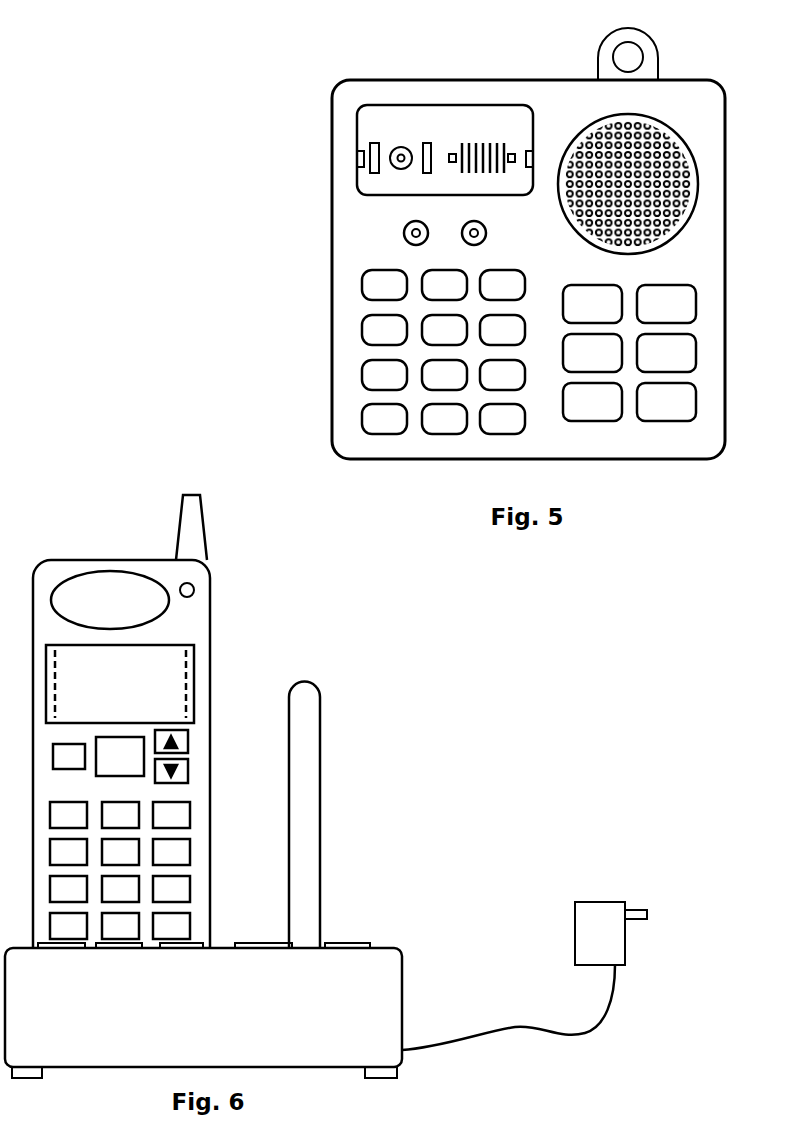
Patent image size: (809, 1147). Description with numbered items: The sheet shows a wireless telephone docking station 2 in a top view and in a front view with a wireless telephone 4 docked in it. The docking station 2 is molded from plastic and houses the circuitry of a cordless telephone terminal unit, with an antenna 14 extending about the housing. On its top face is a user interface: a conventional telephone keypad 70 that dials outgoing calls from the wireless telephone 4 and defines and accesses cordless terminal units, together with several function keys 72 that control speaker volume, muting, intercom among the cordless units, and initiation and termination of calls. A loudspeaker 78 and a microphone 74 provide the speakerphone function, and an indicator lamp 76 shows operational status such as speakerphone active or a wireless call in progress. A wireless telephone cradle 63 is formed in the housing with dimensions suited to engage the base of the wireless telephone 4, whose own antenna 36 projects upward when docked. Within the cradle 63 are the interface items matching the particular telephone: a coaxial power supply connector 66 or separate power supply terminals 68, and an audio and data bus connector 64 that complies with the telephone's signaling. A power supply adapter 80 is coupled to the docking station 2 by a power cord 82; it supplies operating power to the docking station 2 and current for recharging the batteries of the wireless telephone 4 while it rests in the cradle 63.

In FIG. 5, the wireless telephone docking station 2 is at (611, 459).
In FIG. 6, the wireless telephone docking station 2 is at (402, 948).
In FIG. 6, the wireless telephone 4 is at (210, 650).
In FIG. 5, the antenna 14 is at (643, 52).
In FIG. 6, the antenna 14 is at (320, 770).
In FIG. 6, the antenna 36 is at (180, 527).
In FIG. 5, the wireless telephone cradle 63 is at (355, 128).
In FIG. 5, the audio and data bus connector 64 is at (460, 143).
In FIG. 5, the coaxial power supply connector 66 is at (401, 170).
In FIG. 5, the separate power supply terminals 68 is at (374, 143).
In FIG. 5, the telephone keypad 70 is at (330, 270).
In FIG. 5, the function keys 72 is at (700, 285).
In FIG. 5, the microphone 74 is at (404, 233).
In FIG. 5, the indicator lamp 76 is at (486, 233).
In FIG. 5, the loudspeaker 78 is at (694, 155).
In FIG. 6, the power supply adapter 80 is at (600, 902).
In FIG. 6, the power cord 82 is at (523, 1028).